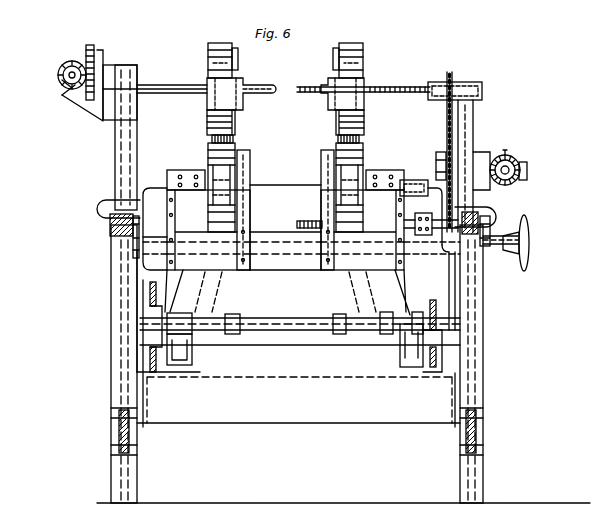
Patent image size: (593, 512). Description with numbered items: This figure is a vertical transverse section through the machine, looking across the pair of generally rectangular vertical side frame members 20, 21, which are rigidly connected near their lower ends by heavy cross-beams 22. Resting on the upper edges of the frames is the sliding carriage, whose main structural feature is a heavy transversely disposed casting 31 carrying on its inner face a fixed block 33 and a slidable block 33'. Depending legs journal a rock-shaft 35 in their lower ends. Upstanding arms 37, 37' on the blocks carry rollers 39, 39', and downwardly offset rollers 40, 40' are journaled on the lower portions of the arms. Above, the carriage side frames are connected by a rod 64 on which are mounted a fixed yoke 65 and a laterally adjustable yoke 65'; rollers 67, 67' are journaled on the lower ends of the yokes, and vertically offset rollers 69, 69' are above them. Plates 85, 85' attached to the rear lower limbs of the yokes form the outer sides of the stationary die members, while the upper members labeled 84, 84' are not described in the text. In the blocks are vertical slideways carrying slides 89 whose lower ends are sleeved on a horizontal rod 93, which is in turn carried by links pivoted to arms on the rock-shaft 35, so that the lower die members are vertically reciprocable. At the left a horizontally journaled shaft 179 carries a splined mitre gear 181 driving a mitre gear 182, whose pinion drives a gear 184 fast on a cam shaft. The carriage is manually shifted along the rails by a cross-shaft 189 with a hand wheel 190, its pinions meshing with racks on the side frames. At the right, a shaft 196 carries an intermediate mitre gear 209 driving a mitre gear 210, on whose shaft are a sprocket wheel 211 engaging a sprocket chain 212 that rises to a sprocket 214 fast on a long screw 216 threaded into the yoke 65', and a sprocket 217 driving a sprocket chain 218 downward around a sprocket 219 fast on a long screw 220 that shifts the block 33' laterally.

The side frame member 20 is at (111, 347).
The side frame member 21 is at (483, 345).
The cross-beams 22 is at (304, 423).
The casting 31 is at (285, 227).
The block 33 is at (210, 288).
The block 33' is at (362, 288).
The rock-shaft 35 is at (300, 338).
The arm 37 is at (258, 210).
The arm 37' is at (314, 206).
The roller 39 is at (239, 177).
The roller 39' is at (370, 177).
The roller 40 is at (198, 230).
The roller 40' is at (350, 230).
The rod 64 is at (146, 85).
The yoke 65 is at (241, 80).
The yoke 65' is at (328, 80).
The roller 67 is at (198, 132).
The roller 67' is at (385, 120).
The roller 69 is at (209, 51).
The roller 69' is at (365, 51).
The gear 84 is at (220, 48).
The gear 84' is at (351, 48).
The die plate 85 is at (202, 116).
The gear 85' is at (365, 114).
The slide 89 is at (168, 190).
The horizontal rod 93 is at (267, 320).
The shaft 179 is at (65, 85).
The mitre gear 181 is at (66, 64).
The mitre gear 182 is at (88, 45).
The gear 184 is at (97, 102).
The cross-shaft 189 is at (495, 246).
The hand wheel 190 is at (528, 270).
The shaft 196 is at (507, 156).
The intermediate mitre gear 209 is at (522, 174).
The mitre gear 210 is at (506, 153).
The sprocket wheel 211 is at (470, 152).
The sprocket chain 212 is at (447, 126).
The sprocket 214 is at (446, 82).
The long screw 216 is at (402, 87).
The sprocket 217 is at (436, 158).
The sprocket chain 218 is at (420, 197).
The sprocket 219 is at (428, 240).
The long screw 220 is at (297, 226).